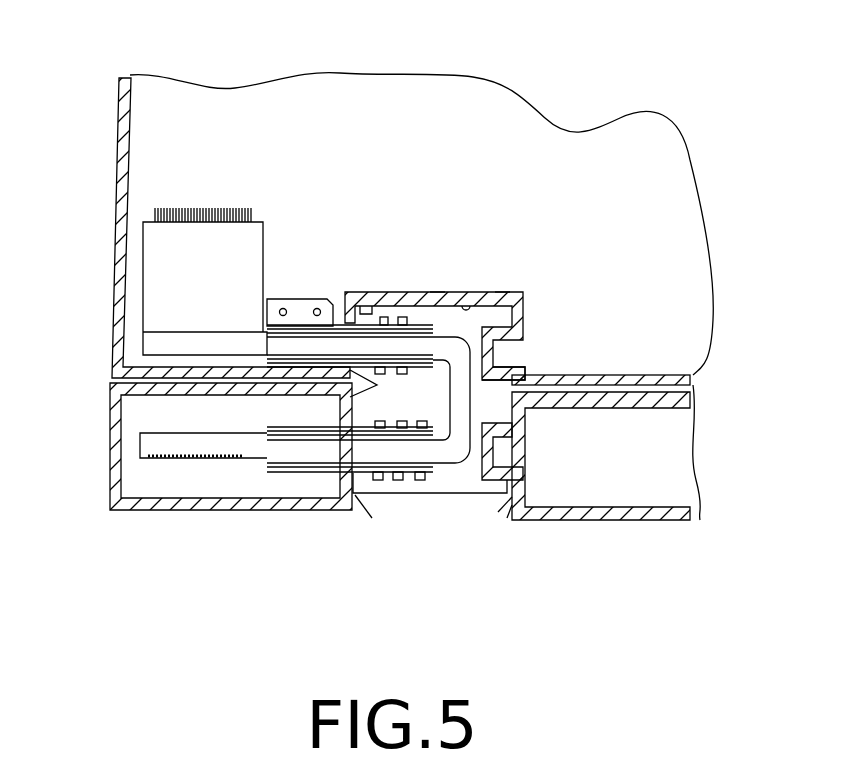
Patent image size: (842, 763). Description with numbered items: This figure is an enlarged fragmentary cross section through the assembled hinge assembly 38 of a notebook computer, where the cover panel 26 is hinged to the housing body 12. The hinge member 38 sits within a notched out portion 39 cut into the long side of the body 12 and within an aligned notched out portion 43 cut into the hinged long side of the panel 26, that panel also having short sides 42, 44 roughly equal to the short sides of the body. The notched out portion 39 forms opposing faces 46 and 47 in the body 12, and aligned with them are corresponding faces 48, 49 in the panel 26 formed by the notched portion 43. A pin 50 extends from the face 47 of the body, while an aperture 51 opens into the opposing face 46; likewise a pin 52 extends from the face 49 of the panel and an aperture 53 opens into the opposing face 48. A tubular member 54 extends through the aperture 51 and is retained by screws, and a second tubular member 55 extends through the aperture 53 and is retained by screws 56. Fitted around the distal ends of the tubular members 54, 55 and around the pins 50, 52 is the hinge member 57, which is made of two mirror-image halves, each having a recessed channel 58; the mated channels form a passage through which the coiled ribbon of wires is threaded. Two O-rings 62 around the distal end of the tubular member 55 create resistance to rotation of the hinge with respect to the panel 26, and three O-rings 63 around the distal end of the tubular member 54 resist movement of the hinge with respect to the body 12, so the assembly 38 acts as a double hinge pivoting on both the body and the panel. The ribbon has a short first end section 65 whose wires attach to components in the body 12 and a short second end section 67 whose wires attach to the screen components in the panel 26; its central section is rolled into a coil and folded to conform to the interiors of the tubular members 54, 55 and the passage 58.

The housing body 12 is at (674, 528).
The cover panel 26 is at (550, 108).
The hinge member 38 is at (437, 500).
The notched out portion 39 is at (498, 512).
The short side 42 is at (110, 438).
The notched out portion 43 is at (468, 306).
The short side 44 is at (116, 184).
The face 46 is at (372, 518).
The face 47 is at (507, 518).
The face 48 is at (372, 300).
The face 49 is at (502, 305).
The pin 50 is at (482, 421).
The aperture 51 is at (357, 476).
The pin 52 is at (482, 380).
The aperture 53 is at (377, 381).
The tubular member 54 is at (267, 470).
The second tubular member 55 is at (276, 325).
The screws 56 is at (317, 312).
The hinge member 57 is at (437, 302).
The recessed channel 58 is at (462, 463).
The O-rings 62 is at (402, 317).
The O-rings 63 is at (420, 481).
The first end section 65 is at (188, 458).
The second end section 67 is at (143, 281).